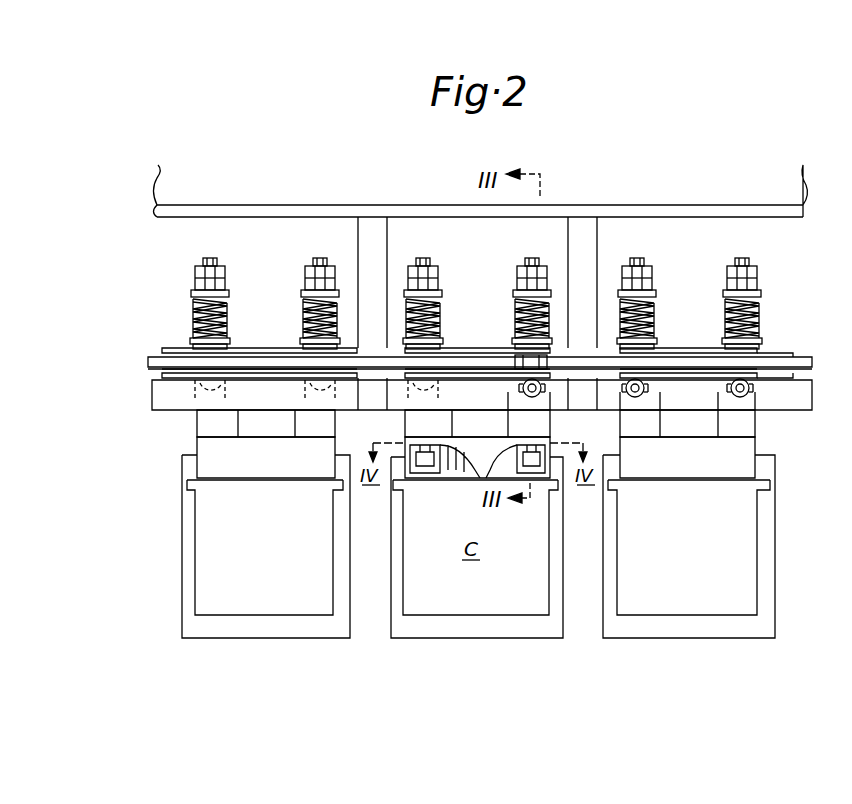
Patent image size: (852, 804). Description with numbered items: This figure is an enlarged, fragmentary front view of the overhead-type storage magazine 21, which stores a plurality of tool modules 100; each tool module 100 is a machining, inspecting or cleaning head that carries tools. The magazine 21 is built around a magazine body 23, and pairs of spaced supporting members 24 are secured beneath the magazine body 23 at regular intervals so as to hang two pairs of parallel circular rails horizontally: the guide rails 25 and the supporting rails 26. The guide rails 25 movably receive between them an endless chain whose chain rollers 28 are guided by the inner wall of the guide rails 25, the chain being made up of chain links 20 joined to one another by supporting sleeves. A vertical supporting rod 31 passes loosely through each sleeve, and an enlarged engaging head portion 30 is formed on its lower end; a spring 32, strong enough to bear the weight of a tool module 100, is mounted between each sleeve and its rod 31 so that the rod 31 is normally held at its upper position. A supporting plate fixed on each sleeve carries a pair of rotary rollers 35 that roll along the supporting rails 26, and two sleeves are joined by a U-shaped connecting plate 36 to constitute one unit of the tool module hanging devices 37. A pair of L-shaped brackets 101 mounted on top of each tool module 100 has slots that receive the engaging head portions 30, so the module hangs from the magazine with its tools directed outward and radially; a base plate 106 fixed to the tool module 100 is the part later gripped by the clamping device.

The chain link 20 is at (788, 350).
The storage magazine 21 is at (272, 238).
The magazine body 23 is at (806, 184).
The supporting member 24 is at (357, 240).
The guide rail 25 is at (165, 355).
The supporting rail 26 is at (152, 398).
The chain roller 28 is at (516, 356).
The enlarged engaging head portion 30 is at (428, 474).
The supporting rod 31 is at (205, 260).
The spring 32 is at (230, 322).
The rotary roller 35 is at (530, 398).
The U-shaped connecting plate 36 is at (466, 474).
The tool module hanging device 37 is at (428, 252).
The tool module 100 is at (272, 630).
The L-shaped bracket 101 is at (188, 468).
The base plate 106 is at (190, 640).